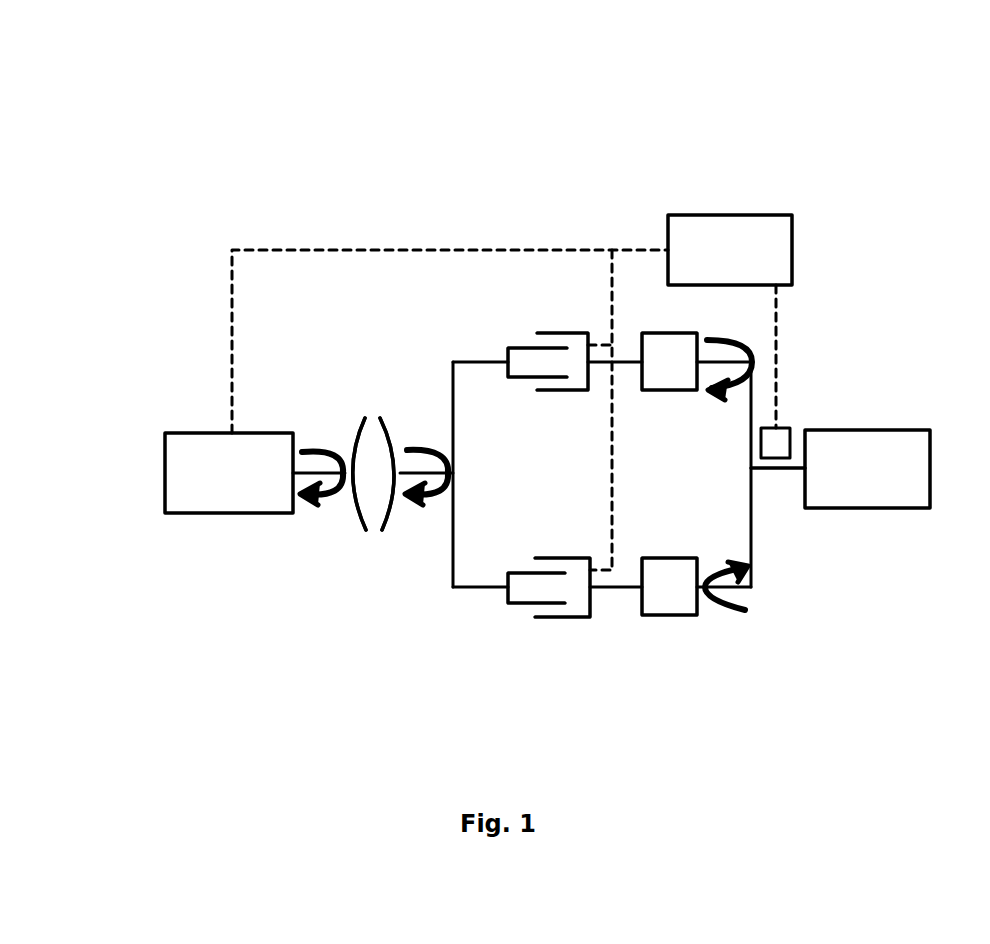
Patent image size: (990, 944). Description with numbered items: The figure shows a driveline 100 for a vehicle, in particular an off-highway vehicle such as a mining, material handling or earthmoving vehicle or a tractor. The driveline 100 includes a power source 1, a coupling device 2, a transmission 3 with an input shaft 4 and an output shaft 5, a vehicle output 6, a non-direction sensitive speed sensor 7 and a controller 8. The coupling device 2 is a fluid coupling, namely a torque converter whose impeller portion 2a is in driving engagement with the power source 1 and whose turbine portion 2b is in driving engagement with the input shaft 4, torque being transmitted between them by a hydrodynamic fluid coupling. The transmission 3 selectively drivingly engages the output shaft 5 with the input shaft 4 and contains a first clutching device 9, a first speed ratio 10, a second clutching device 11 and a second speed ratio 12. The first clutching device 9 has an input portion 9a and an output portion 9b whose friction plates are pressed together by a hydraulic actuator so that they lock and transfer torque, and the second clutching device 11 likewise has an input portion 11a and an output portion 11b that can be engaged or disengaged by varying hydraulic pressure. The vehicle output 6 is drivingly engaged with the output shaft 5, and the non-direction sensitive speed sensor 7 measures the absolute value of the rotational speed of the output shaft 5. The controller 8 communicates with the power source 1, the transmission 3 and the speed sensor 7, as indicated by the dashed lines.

The driveline 100 is at (247, 138).
The power source 1 is at (238, 515).
The coupling device 2 is at (372, 380).
The impeller portion 2a is at (356, 430).
The turbine portion 2b is at (386, 426).
The transmission 3 is at (688, 682).
The input shaft 4 is at (445, 498).
The output shaft 5 is at (762, 471).
The vehicle output 6 is at (870, 510).
The non-direction sensitive speed sensor 7 is at (778, 425).
The controller 8 is at (745, 213).
The first clutching device 9 is at (516, 300).
The input portion 9a is at (517, 379).
The output portion 9b is at (557, 392).
The first speed ratio 10 is at (680, 391).
The second clutching device 11 is at (508, 632).
The input portion 11a is at (520, 572).
The output portion 11b is at (552, 558).
The second speed ratio 12 is at (668, 617).